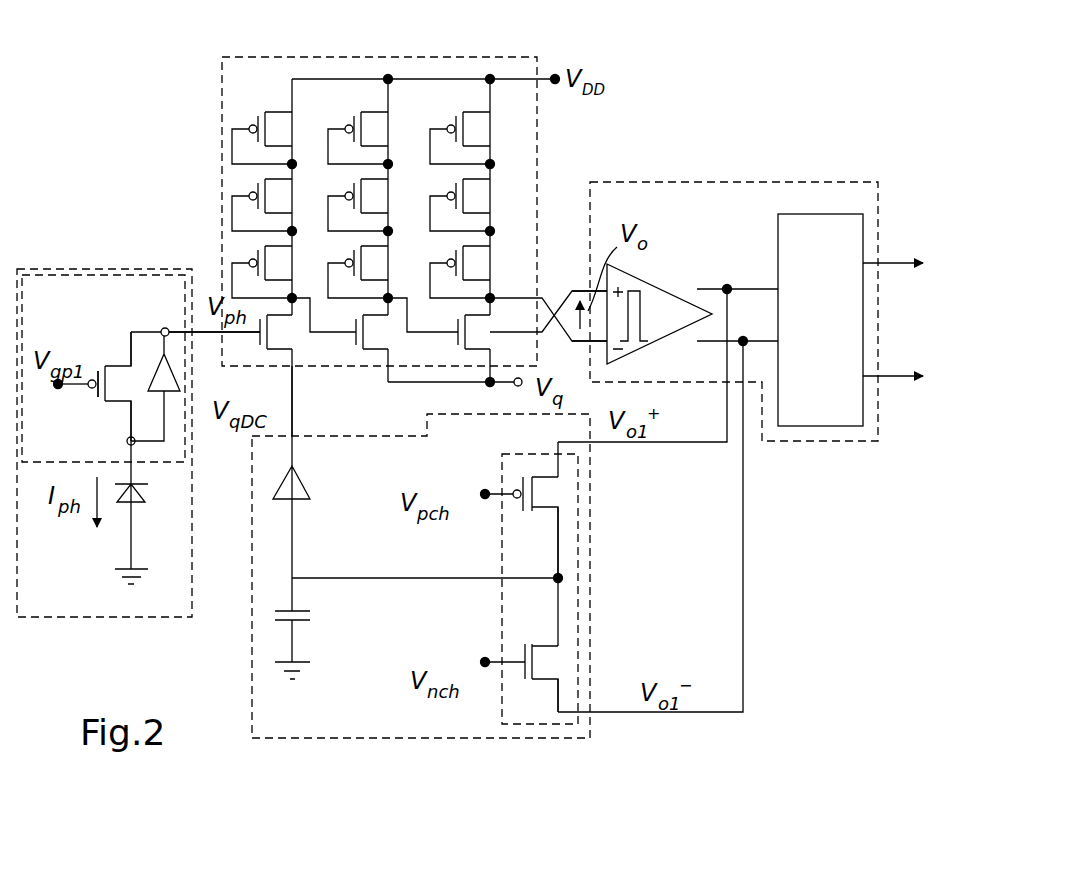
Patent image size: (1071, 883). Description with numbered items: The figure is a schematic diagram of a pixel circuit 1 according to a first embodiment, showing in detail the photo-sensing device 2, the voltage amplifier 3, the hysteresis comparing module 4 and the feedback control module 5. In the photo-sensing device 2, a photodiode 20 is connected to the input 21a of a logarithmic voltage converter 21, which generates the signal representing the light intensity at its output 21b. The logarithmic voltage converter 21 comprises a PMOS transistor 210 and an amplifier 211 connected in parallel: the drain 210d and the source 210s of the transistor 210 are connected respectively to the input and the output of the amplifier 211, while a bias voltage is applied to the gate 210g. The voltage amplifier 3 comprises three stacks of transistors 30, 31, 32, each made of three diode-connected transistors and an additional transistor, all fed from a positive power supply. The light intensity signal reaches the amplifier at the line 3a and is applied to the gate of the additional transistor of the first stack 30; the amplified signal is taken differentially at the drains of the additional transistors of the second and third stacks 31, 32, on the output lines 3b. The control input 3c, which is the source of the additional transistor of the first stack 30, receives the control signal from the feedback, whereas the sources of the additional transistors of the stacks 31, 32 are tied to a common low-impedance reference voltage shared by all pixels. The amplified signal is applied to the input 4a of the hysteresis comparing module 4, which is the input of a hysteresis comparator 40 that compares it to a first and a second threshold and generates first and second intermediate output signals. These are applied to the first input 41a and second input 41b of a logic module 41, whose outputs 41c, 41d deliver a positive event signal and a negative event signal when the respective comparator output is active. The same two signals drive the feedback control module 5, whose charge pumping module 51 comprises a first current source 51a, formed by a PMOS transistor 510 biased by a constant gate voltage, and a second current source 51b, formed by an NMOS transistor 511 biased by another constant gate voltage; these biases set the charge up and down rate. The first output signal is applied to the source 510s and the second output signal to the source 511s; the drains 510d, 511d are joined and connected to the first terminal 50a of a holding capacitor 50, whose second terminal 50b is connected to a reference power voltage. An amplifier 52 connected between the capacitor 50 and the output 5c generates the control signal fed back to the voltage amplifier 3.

The pixel circuit 1 is at (97, 137).
The photo-sensing device 2 is at (66, 619).
The photodiode 20 is at (128, 510).
The logarithmic voltage converter 21 is at (128, 276).
The input of the logarithmic voltage converter 21a is at (131, 470).
The output of the logarithmic voltage converter 21b is at (166, 329).
The transistor 210 is at (128, 367).
The source of the transistor 210s is at (130, 342).
The gate of the transistor 210g is at (92, 392).
The drain of the transistor 210d is at (138, 446).
The amplifier 211 is at (182, 378).
The voltage amplifier 3 is at (232, 58).
The voltage amplifier input 3a is at (206, 332).
The ladder output lines 3b is at (573, 328).
The control input of the voltage amplifier 3c is at (292, 392).
The first stack of transistors 30 is at (278, 98).
The second stack of transistors 31 is at (377, 98).
The third stack of transistors 32 is at (471, 98).
The hysteresis comparing module 4 is at (777, 183).
The input of the hysteresis comparing module 4a is at (592, 292).
The hysteresis comparator 40 is at (690, 292).
The logic module 41 is at (778, 238).
The first input of the logic module 41a is at (778, 282).
The second input of the logic module 41b is at (776, 348).
The first output of the logic module 41c is at (872, 270).
The second output of the logic module 41d is at (868, 380).
The feedback control module 5 is at (252, 676).
The output of the feedback control module 5c is at (292, 437).
The holding capacitor 50 is at (302, 619).
The first terminal of the capacitor 50a is at (292, 590).
The second terminal of the capacitor 50b is at (306, 652).
The charge pumping module 51 is at (503, 726).
The first current source 51a is at (567, 497).
The second current source 51b is at (570, 664).
The amplifier 52 is at (300, 488).
The PMOS transistor 510 is at (548, 477).
The source of the PMOS transistor 510s is at (558, 465).
The drain of the PMOS transistor 510d is at (558, 551).
The NMOS transistor 511 is at (541, 683).
The drain of the NMOS transistor 511d is at (558, 613).
The source of the NMOS transistor 511s is at (576, 714).